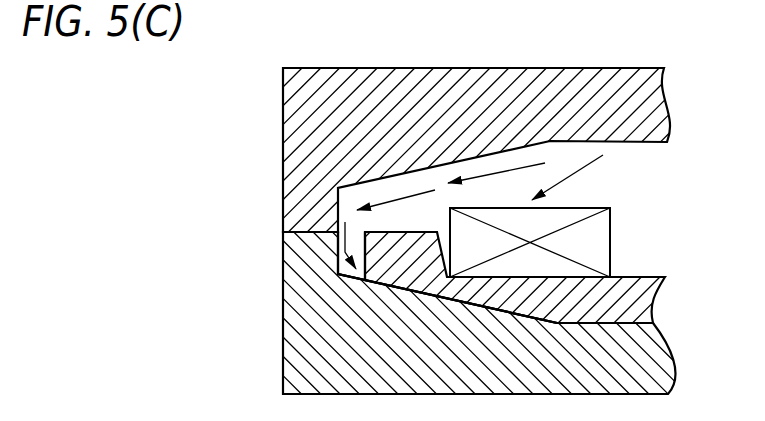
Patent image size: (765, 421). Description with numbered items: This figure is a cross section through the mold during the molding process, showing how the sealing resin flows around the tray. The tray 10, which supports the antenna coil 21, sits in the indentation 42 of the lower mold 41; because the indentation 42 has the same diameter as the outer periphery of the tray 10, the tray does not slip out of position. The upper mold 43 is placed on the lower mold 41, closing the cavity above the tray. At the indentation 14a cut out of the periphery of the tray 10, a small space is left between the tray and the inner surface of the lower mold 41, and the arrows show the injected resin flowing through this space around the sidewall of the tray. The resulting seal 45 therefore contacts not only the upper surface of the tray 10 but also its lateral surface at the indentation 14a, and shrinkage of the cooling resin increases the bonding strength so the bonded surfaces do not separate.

The upper mold 43 is at (290, 114).
The lower mold 41 is at (283, 332).
The indentation 42 is at (337, 246).
The indentation 14a is at (363, 255).
The tray 10 is at (398, 283).
The antenna coil 21 is at (610, 221).
The seal 45 is at (638, 142).